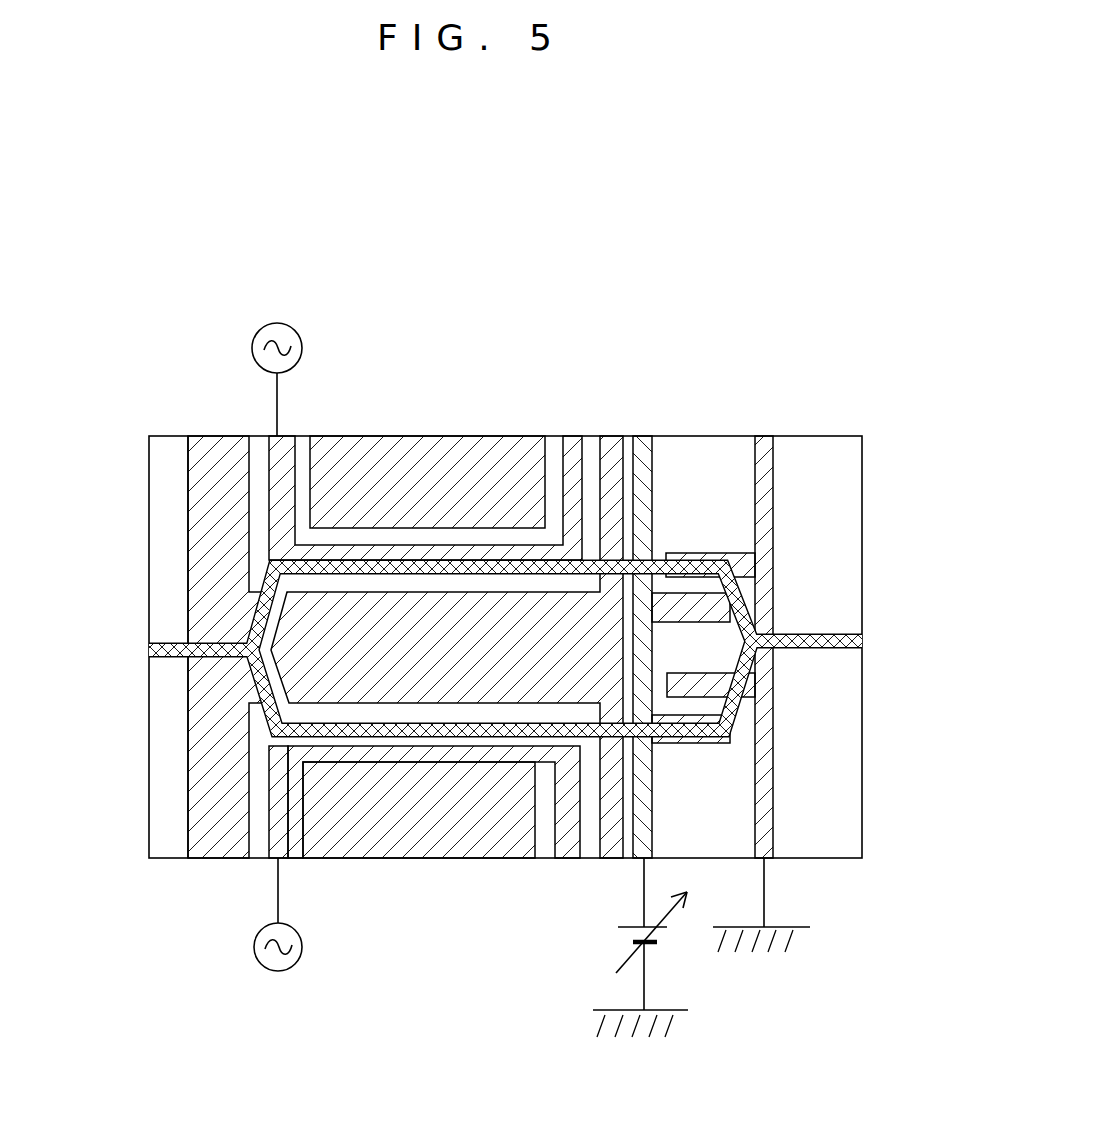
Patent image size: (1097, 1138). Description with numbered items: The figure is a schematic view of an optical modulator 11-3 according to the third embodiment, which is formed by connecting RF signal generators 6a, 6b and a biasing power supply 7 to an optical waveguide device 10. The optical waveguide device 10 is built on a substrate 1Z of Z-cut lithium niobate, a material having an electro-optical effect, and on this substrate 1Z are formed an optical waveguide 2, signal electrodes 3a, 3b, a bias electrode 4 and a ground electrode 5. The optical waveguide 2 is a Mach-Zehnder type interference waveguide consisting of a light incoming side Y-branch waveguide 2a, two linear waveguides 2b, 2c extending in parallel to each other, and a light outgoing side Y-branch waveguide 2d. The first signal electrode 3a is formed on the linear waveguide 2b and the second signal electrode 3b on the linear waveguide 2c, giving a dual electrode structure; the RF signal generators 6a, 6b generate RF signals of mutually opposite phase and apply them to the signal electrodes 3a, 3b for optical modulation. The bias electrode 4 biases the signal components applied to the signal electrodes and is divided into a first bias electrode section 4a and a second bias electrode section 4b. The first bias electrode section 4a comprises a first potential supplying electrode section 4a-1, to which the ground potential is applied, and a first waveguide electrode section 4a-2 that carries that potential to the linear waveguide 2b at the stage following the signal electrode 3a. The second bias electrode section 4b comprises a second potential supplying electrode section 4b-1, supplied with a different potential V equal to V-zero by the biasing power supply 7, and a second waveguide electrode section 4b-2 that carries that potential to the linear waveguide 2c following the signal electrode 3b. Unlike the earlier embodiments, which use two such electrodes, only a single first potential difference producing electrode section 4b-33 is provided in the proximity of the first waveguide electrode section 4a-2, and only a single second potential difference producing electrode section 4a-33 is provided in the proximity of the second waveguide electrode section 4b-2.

The substrate 1Z is at (828, 458).
The optical waveguide 2 is at (843, 636).
The light incoming side Y-branch waveguide 2a is at (257, 617).
The linear waveguide 2b is at (378, 568).
The linear waveguide 2c is at (347, 730).
The light outgoing side Y-branch waveguide 2d is at (780, 633).
The signal electrode 3a is at (490, 548).
The signal electrode 3b is at (567, 780).
The bias electrode 4 is at (800, 832).
The first bias electrode section 4a is at (767, 785).
The first potential supplying electrode section 4a-1 is at (770, 450).
The first waveguide electrode section 4a-2 is at (743, 550).
The second potential difference producing electrode section 4a-33 is at (667, 673).
The second bias electrode section 4b is at (640, 452).
The second potential supplying electrode section 4b-1 is at (653, 822).
The second waveguide electrode section 4b-2 is at (715, 707).
The first potential difference producing electrode section 4b-33 is at (750, 577).
The ground electrode 5 is at (352, 450).
The RF signal generator 6a is at (277, 323).
The RF signal generator 6b is at (286, 971).
The biasing power supply 7 is at (618, 927).
The optical waveguide device 10 is at (152, 876).
The optical modulator 11-3 is at (155, 405).